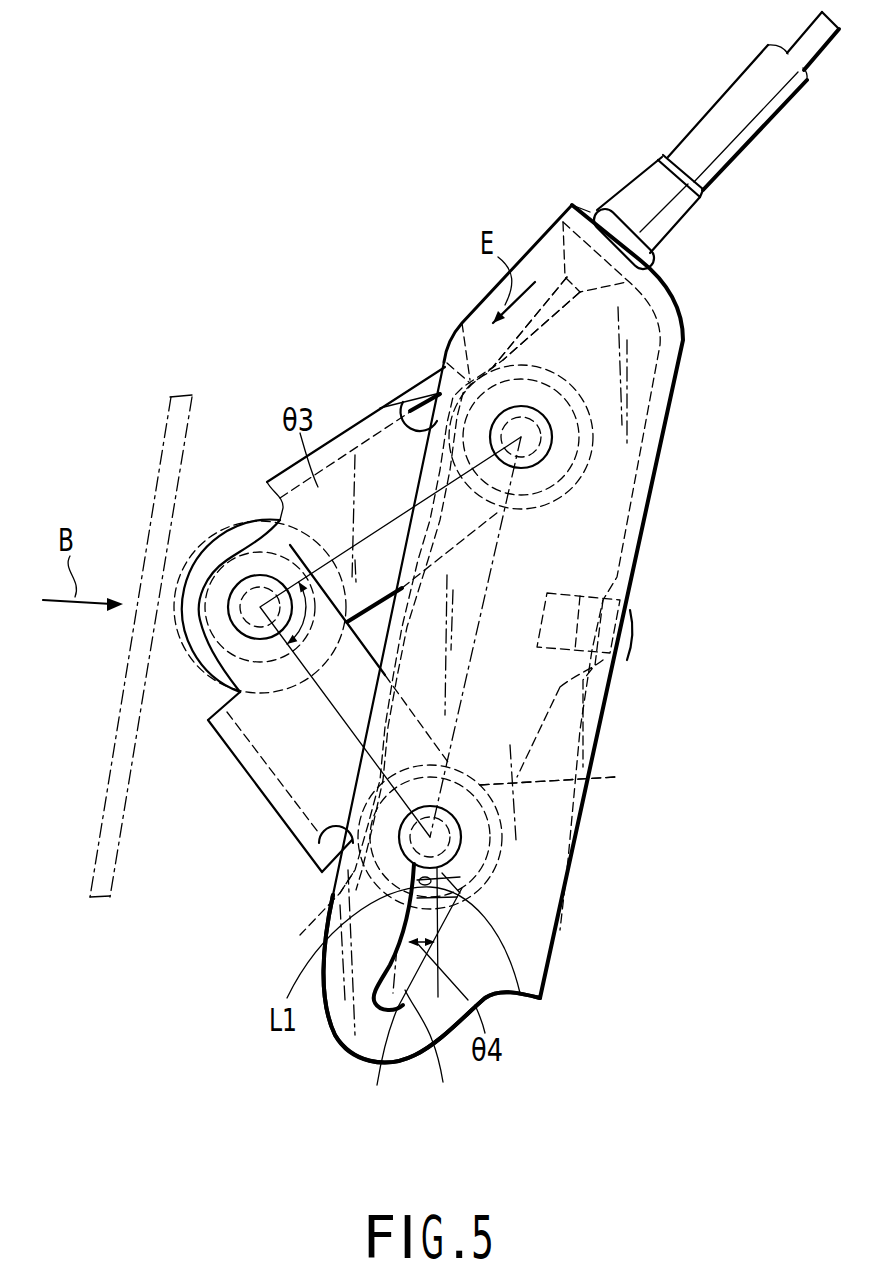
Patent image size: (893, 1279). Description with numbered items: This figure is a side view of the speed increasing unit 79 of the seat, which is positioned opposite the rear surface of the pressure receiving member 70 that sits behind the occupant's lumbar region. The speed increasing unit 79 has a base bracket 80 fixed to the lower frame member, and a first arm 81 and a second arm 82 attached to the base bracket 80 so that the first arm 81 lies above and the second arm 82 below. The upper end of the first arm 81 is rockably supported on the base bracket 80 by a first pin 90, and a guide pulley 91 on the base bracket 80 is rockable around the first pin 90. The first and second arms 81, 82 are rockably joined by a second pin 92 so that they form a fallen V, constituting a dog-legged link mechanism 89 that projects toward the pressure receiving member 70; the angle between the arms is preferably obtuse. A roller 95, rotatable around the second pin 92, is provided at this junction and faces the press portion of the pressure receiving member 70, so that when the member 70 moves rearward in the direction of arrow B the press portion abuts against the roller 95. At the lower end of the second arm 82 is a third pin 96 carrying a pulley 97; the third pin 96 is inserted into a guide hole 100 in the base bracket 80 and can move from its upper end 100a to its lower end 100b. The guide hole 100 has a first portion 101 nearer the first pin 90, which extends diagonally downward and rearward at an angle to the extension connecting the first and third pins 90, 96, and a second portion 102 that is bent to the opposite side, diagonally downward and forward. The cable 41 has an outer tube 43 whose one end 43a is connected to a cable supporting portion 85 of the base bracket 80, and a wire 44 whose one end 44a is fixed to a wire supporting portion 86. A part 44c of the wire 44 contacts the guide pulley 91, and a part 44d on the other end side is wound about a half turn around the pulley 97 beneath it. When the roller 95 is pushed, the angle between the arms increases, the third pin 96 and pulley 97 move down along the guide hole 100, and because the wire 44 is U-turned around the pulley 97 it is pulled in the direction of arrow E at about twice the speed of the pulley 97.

The cable 41 is at (697, 110).
The outer tube 43 is at (747, 127).
The one end of the outer tube 43a is at (647, 263).
The wire 44 is at (815, 52).
The one end of the wire 44a is at (613, 677).
The part of the wire 44c is at (462, 322).
The part of the wire on the other end side 44d is at (340, 893).
The pressure receiving member 70 is at (117, 703).
The speed increasing unit 79 is at (409, 222).
The base bracket 80 is at (648, 515).
The first arm 81 is at (373, 455).
The second arm 82 is at (302, 783).
The cable supporting portion 85 is at (593, 213).
The wire supporting portion 86 is at (635, 640).
The dog-legged link mechanism 89 is at (202, 792).
The first pin 90 is at (530, 438).
The guide pulley 91 is at (588, 380).
The second pin 92 is at (258, 600).
The roller 95 is at (205, 652).
The third pin 96 is at (436, 837).
The pulley 97 is at (473, 855).
The guide hole 100 is at (526, 995).
The one end of the guide hole 100a is at (615, 777).
The other end of the guide hole 100b is at (380, 1068).
The first portion of the guide hole 101 is at (457, 889).
The second portion of the guide hole 102 is at (436, 1055).